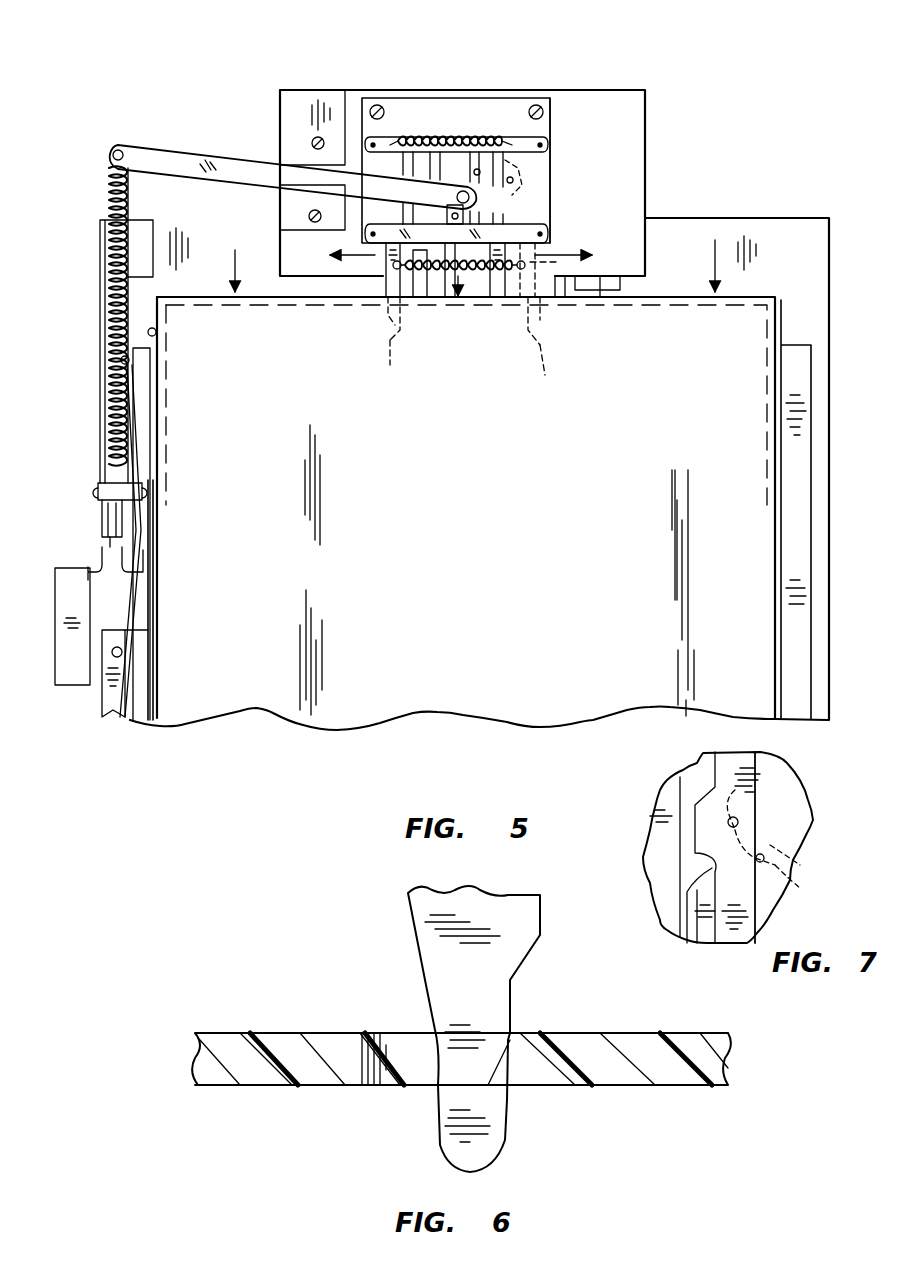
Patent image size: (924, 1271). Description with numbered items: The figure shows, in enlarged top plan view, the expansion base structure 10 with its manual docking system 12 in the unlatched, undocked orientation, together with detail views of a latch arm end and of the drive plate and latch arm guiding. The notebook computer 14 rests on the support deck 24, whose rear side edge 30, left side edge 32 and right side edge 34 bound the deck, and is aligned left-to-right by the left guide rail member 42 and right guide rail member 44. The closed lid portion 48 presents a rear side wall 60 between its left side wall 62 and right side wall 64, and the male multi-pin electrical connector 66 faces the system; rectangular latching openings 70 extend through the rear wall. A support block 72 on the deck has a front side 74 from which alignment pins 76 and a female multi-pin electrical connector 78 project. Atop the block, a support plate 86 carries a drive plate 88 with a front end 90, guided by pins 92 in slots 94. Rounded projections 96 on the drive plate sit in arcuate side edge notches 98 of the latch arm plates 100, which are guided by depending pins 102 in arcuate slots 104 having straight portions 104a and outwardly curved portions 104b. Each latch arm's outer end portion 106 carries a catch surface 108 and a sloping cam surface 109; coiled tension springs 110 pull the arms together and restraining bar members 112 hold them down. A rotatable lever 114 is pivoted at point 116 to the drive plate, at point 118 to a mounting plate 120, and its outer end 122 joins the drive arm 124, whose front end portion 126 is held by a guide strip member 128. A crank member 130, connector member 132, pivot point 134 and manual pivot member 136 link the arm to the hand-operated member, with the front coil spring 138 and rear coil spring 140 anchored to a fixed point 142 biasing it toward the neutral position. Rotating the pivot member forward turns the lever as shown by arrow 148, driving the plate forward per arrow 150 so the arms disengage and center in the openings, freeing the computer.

In FIG. 5, the expansion base structure 10 is at (720, 190).
In FIG. 5, the manual docking system 12 is at (250, 95).
In FIG. 5, the notebook computer 14 is at (245, 712).
In FIG. 5, the support deck 24 is at (806, 256).
In FIG. 5, the rear side edge 30 is at (813, 218).
In FIG. 5, the left side edge 32 is at (103, 700).
In FIG. 5, the right side edge 34 is at (829, 520).
In FIG. 5, the left guide rail member 42 is at (142, 696).
In FIG. 5, the right guide rail member 44 is at (829, 600).
In FIG. 5, the lid portion 48 is at (498, 520).
In FIG. 5, the rear side wall of the lid 60 is at (760, 300).
In FIG. 6, the rear side wall of the lid 60 is at (285, 1040).
In FIG. 5, the left side wall of the lid 62 is at (157, 332).
In FIG. 5, the right side wall of the lid 64 is at (778, 330).
In FIG. 5, the male multi-pin electrical connector 66 is at (540, 300).
In FIG. 5, the latching openings 70 is at (385, 300).
In FIG. 6, the latching openings 70 is at (372, 1075).
In FIG. 5, the support block 72 is at (645, 112).
In FIG. 5, the front side of the support block 74 is at (635, 297).
In FIG. 5, the alignment pins 76 is at (595, 300).
In FIG. 5, the female multi-pin electrical connector 78 is at (560, 272).
In FIG. 5, the support plate 86 is at (500, 160).
In FIG. 7, the support plate 86 is at (770, 798).
In FIG. 5, the drive plate 88 is at (470, 300).
In FIG. 7, the drive plate 88 is at (668, 836).
In FIG. 5, the front end of the drive plate 90 is at (432, 300).
In FIG. 5, the pins 92 is at (465, 135).
In FIG. 5, the slots 94 is at (432, 140).
In FIG. 5, the rounded projections 96 is at (398, 150).
In FIG. 7, the rounded projections 96 is at (695, 878).
In FIG. 5, the arcuate side edge notches 98 is at (545, 190).
In FIG. 7, the arcuate side edge notches 98 is at (750, 892).
In FIG. 5, the latch arm plates 100 is at (395, 215).
In FIG. 6, the latch arm plates 100 is at (410, 905).
In FIG. 7, the latch arm plates 100 is at (712, 775).
In FIG. 5, the pins 102 is at (552, 170).
In FIG. 7, the pins 102 is at (740, 822).
In FIG. 5, the arcuate slots 104 is at (550, 142).
In FIG. 7, the arcuate slots 104 is at (805, 860).
In FIG. 7, the straight portions of the slots 104a is at (762, 775).
In FIG. 7, the outwardly curved portions of the slots 104b is at (802, 888).
In FIG. 5, the outer end portion of the latch arm 106 is at (390, 350).
In FIG. 6, the outer end portion of the latch arm 106 is at (480, 1155).
In FIG. 6, the catch surface 108 is at (512, 1070).
In FIG. 6, the sloping cam surface 109 is at (515, 1122).
In FIG. 5, the coiled tension springs 110 is at (518, 150).
In FIG. 5, the restraining bar members 112 is at (552, 160).
In FIG. 5, the rotatable lever 114 is at (240, 169).
In FIG. 5, the pivot point 116 is at (495, 300).
In FIG. 5, the pivot point 118 is at (355, 98).
In FIG. 5, the mounting plate 120 is at (290, 208).
In FIG. 5, the outer end of the lever 122 is at (124, 150).
In FIG. 5, the drive arm 124 is at (110, 365).
In FIG. 5, the front end portion of the drive arm 126 is at (98, 496).
In FIG. 5, the guide strip member 128 is at (130, 626).
In FIG. 5, the crank member 130 is at (140, 560).
In FIG. 5, the connector member 132 is at (115, 520).
In FIG. 5, the pivot point 134 is at (152, 590).
In FIG. 5, the manual pivot member 136 is at (55, 640).
In FIG. 5, the front coil spring 138 is at (110, 436).
In FIG. 5, the rear coil spring 140 is at (108, 285).
In FIG. 5, the fixed point 142 is at (118, 372).
In FIG. 5, the arrow 148 is at (270, 110).
In FIG. 5, the arrow 150 is at (455, 300).